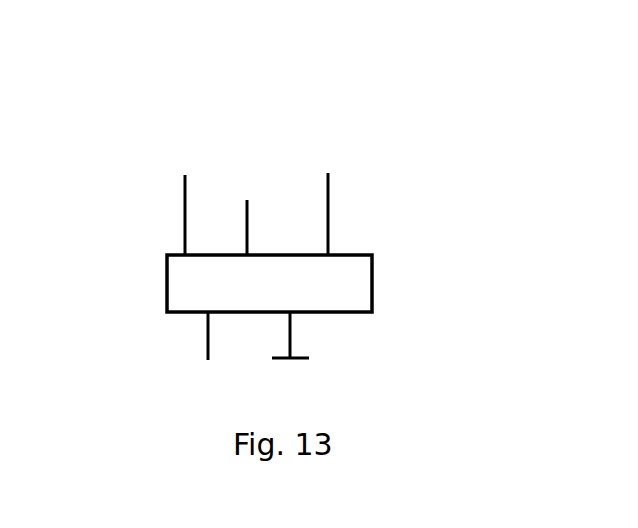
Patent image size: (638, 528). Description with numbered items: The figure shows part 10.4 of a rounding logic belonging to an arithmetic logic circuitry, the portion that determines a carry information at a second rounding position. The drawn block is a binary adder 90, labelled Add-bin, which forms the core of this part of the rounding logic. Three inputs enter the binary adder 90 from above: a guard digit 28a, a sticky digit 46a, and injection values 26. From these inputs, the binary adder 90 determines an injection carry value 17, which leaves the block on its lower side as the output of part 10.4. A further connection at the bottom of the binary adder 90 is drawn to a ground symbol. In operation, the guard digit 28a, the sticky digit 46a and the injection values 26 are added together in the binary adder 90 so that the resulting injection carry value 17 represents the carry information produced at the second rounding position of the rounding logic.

The part of rounding logic 10.4 is at (428, 76).
The binary adder 90 is at (166, 285).
The guard digit 28a is at (180, 170).
The sticky digit 46a is at (245, 198).
The injection values 26 is at (328, 168).
The injection carry value 17 is at (209, 368).